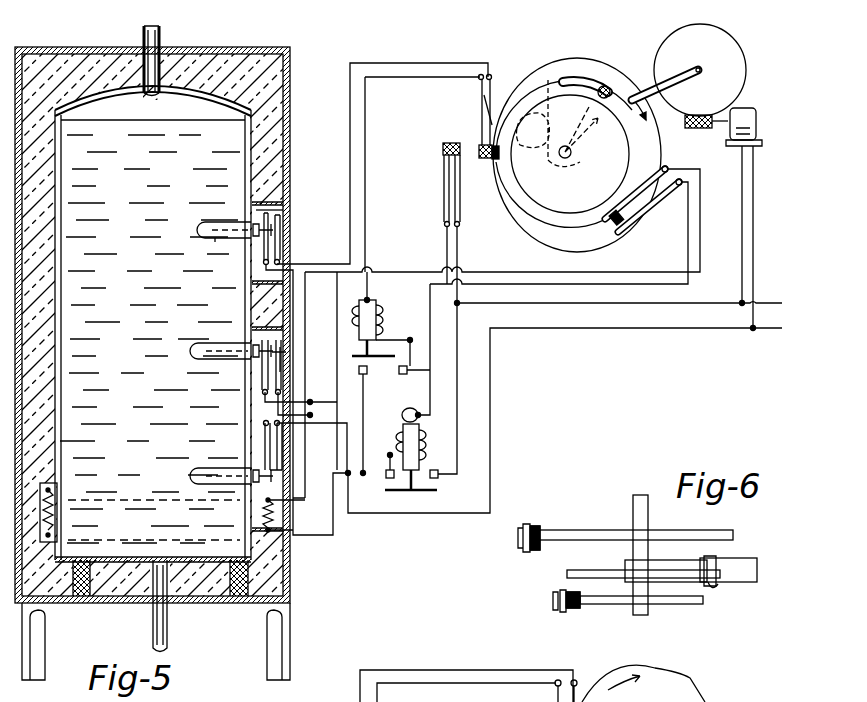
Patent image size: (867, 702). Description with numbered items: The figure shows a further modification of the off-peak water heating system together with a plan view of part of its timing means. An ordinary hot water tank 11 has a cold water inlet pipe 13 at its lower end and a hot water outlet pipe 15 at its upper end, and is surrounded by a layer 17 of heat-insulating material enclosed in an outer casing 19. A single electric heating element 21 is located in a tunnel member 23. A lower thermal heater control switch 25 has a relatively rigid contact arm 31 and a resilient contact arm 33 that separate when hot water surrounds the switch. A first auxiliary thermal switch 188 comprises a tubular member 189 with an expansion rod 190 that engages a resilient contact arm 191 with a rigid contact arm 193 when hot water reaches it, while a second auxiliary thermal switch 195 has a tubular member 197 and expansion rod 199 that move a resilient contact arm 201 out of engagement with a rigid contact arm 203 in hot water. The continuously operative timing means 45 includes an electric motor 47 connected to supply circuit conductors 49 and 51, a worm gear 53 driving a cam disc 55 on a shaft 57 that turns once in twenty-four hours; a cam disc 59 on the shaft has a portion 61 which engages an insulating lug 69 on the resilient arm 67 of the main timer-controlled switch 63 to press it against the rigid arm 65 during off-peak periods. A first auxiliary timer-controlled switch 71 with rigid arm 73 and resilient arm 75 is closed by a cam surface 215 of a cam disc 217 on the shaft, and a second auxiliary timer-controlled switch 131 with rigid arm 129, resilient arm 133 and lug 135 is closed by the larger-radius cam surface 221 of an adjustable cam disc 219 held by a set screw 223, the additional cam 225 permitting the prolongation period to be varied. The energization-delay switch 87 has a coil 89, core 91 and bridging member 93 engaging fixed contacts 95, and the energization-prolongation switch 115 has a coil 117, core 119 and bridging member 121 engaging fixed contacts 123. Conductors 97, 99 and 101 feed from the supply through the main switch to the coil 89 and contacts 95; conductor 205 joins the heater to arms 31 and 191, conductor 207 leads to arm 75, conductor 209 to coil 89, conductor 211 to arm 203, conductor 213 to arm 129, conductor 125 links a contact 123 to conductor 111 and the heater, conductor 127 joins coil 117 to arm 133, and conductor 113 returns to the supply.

In FIG. 5, the hot water tank 11 is at (58, 300).
In FIG. 5, the cold water inlet pipe 13 is at (167, 632).
In FIG. 5, the hot water outlet pipe 15 is at (161, 38).
In FIG. 5, the layer of heat-insulating material 17 is at (278, 132).
In FIG. 5, the outer casing 19 is at (290, 86).
In FIG. 5, the electric heating element 21 is at (300, 522).
In FIG. 5, the tunnel member 23 is at (70, 486).
In FIG. 5, the lower thermal heater control switch 25 is at (206, 456).
In FIG. 5, the relatively rigid contact arm 31 is at (264, 446).
In FIG. 5, the resilient contact arm 33 is at (283, 452).
In FIG. 5, the continuously operative timing means 45 is at (630, 47).
In FIG. 5, the electric motor 47 is at (746, 108).
In FIG. 5, the supply circuit conductor 49 is at (762, 302).
In FIG. 5, the supply circuit conductor 51 is at (766, 328).
In FIG. 5, the worm gear 53 is at (702, 130).
In FIG. 5, the cam disc 55 is at (744, 54).
In FIG. 5, the shaft 57 is at (645, 88).
In FIG. 6, the shaft 57 is at (636, 497).
In FIG. 5, the cam disc 59 is at (530, 68).
In FIG. 6, the cam disc 59 is at (714, 530).
In FIG. 5, the portion of cam disc 61 is at (496, 196).
In FIG. 6, the portion of cam disc 61 is at (562, 530).
In FIG. 5, the main timer-controlled heater-control switch 63 is at (446, 137).
In FIG. 6, the main timer-controlled heater-control switch 63 is at (535, 571).
In FIG. 5, the relatively rigid contact arm 65 is at (444, 190).
In FIG. 5, the resilient contact arm 67 is at (460, 208).
In FIG. 5, the lug 69 is at (455, 143).
In FIG. 5, the auxiliary timer-controlled switch 71 is at (486, 179).
In FIG. 6, the auxiliary timer-controlled switch 71 is at (573, 637).
In FIG. 5, the relatively rigid contact arm 73 is at (482, 104).
In FIG. 5, the resilient contact arm 75 is at (495, 118).
In FIG. 5, the electromagnetic retardation-switching means 87 is at (408, 296).
In FIG. 5, the coil 89 is at (359, 313).
In FIG. 5, the magnetizable core 91 is at (384, 322).
In FIG. 5, the contact bridging member 93 is at (366, 356).
In FIG. 5, the fixed contact members 95 is at (404, 376).
In FIG. 5, the conductor 97 is at (650, 313).
In FIG. 5, the conductor 99 is at (458, 238).
In FIG. 5, the conductor 101 is at (444, 250).
In FIG. 5, the conductor 111 is at (364, 400).
In FIG. 5, the conductor 113 is at (346, 438).
In FIG. 5, the energization-prolongation electromagnetic switch 115 is at (415, 411).
In FIG. 5, the coil 117 is at (420, 432).
In FIG. 5, the magnetizable core 119 is at (419, 460).
In FIG. 5, the contact bridging member 121 is at (408, 492).
In FIG. 5, the fixed contact members 123 is at (438, 478).
In FIG. 5, the conductor 125 is at (376, 466).
In FIG. 5, the conductor 127 is at (604, 303).
In FIG. 5, the relatively rigid contact arm 129 is at (658, 200).
In FIG. 5, the second auxiliary timer-controlled switch 131 is at (630, 230).
In FIG. 6, the second auxiliary timer-controlled switch 131 is at (750, 575).
In FIG. 5, the resilient contact arm 133 is at (660, 162).
In FIG. 5, the lug 135 is at (612, 226).
In FIG. 6, the lug 135 is at (712, 556).
In FIG. 5, the first auxiliary thermal switch 188 is at (238, 208).
In FIG. 5, the tubular member 189 is at (215, 239).
In FIG. 5, the expansion rod 190 is at (268, 214).
In FIG. 5, the resilient contact arm 191 is at (262, 250).
In FIG. 5, the relatively rigid contact arm 193 is at (280, 228).
In FIG. 5, the second auxiliary thermal switch 195 is at (214, 333).
In FIG. 5, the tubular member 197 is at (218, 360).
In FIG. 5, the expansion rod 199 is at (258, 320).
In FIG. 5, the resilient contact arm 201 is at (288, 372).
In FIG. 5, the relatively rigid contact arm 203 is at (262, 382).
In FIG. 5, the conductor 205 is at (306, 328).
In FIG. 5, the conductor 207 is at (415, 63).
In FIG. 5, the conductor 209 is at (366, 180).
In FIG. 5, the conductor 211 is at (276, 398).
In FIG. 5, the conductor 213 is at (307, 405).
In FIG. 5, the cam surface 215 is at (518, 158).
In FIG. 6, the cam surface 215 is at (592, 604).
In FIG. 5, the cam disc 217 is at (557, 208).
In FIG. 6, the cam disc 217 is at (676, 604).
In FIG. 5, the cam disc 219 is at (546, 213).
In FIG. 6, the cam disc 219 is at (592, 570).
In FIG. 5, the cam surface 221 is at (572, 58).
In FIG. 5, the clamping set screw 223 is at (600, 98).
In FIG. 6, the clamping set screw 223 is at (714, 588).
In FIG. 5, the additional adjustable cam 225 is at (557, 123).
In FIG. 6, the additional adjustable cam 225 is at (670, 560).